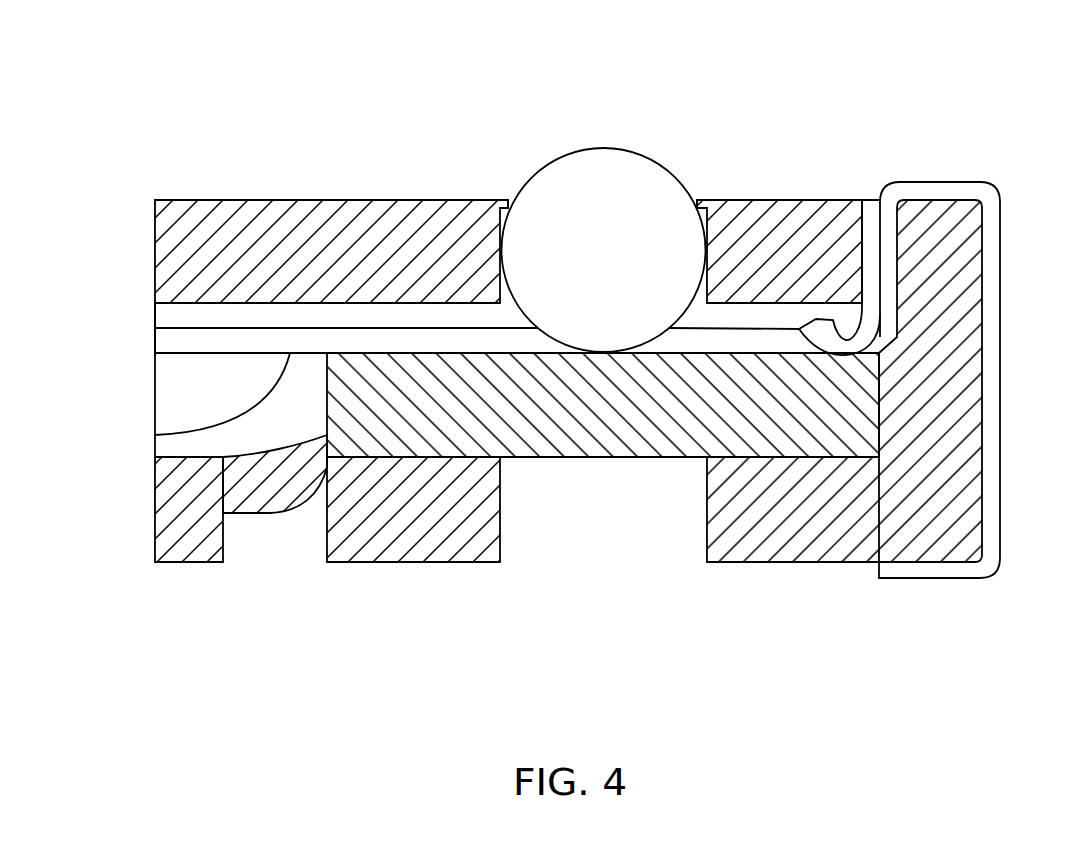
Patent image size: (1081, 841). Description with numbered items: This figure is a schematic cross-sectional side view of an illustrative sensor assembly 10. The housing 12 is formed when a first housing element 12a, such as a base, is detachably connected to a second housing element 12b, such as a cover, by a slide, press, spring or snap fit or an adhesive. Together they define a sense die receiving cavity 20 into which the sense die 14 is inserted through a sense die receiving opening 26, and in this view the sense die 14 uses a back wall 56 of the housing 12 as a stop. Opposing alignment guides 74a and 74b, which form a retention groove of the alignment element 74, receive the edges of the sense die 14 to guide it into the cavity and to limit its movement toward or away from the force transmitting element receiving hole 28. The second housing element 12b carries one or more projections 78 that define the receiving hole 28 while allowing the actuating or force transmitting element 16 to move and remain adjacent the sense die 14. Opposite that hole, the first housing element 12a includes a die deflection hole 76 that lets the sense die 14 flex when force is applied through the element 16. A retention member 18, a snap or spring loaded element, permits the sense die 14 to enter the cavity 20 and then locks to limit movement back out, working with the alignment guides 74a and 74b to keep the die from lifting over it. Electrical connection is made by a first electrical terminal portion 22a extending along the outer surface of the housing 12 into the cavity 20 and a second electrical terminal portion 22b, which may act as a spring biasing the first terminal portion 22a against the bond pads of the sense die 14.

The sensor assembly 10 is at (184, 103).
The housing 12 is at (155, 510).
The first housing element 12a is at (790, 550).
The second housing element 12b is at (792, 208).
The sense die 14 is at (537, 442).
The actuating or force transmitting element 16 is at (608, 148).
The retention member 18 is at (272, 513).
The sense die receiving cavity 20 is at (216, 391).
The first electrical terminal portion 22a is at (993, 192).
The second electrical terminal portion 22b is at (872, 200).
The sense die receiving opening 26 is at (146, 311).
The force transmitting element receiving hole 28 is at (708, 185).
The back wall 56 is at (957, 403).
The alignment element 74 is at (252, 338).
The alignment guide 74a is at (155, 432).
The alignment guide 74b is at (450, 328).
The die deflection hole 76 is at (605, 535).
The projection 78 is at (506, 200).